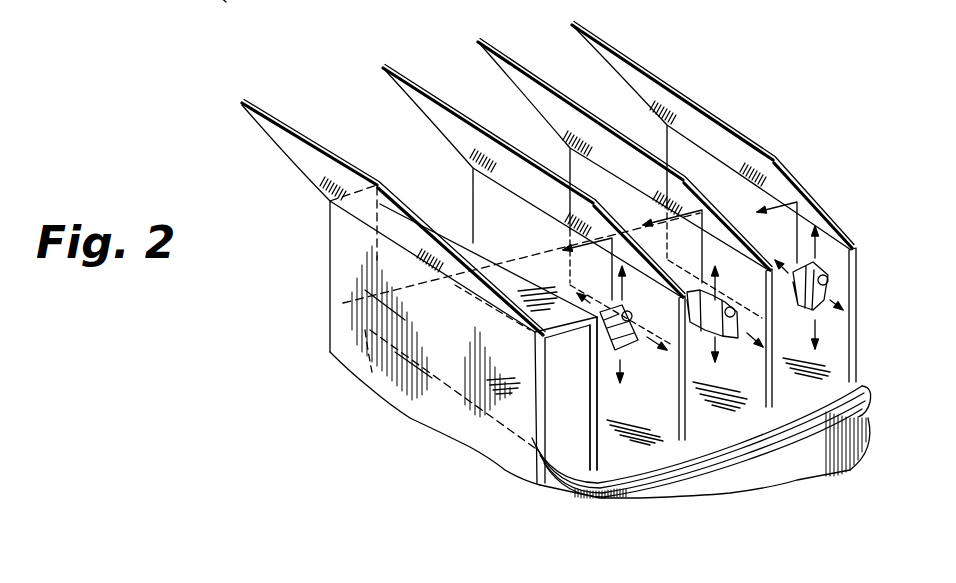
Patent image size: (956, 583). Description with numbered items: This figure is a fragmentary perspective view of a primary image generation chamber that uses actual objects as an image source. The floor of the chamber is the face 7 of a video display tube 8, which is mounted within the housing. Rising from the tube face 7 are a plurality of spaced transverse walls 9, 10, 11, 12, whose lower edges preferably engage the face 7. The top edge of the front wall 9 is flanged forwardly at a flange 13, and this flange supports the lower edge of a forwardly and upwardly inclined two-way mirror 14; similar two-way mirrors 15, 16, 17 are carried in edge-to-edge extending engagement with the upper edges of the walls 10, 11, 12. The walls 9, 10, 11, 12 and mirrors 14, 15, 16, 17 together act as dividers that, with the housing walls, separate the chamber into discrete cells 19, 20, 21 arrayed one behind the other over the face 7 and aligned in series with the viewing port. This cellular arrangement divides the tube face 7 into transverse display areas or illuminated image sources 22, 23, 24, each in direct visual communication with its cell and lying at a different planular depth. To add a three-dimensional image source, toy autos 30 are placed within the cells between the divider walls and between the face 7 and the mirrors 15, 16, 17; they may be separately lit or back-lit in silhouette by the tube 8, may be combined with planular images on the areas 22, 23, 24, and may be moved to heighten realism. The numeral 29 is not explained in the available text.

The face of video display tube 7 is at (757, 421).
The video display tube 8 is at (807, 471).
The front wall 9 is at (600, 419).
The transverse wall 10 is at (685, 393).
The transverse wall 11 is at (771, 368).
The transverse wall 12 is at (856, 284).
The flange 13 is at (565, 327).
The two-way mirror 14 is at (243, 102).
The two-way mirror 15 is at (386, 67).
The two-way mirror 16 is at (497, 52).
The two-way mirror 17 is at (623, 58).
The cell 19 is at (345, 100).
The cell 20 is at (453, 63).
The cell 21 is at (555, 42).
The display area 22 is at (605, 438).
The display area 23 is at (697, 410).
The display area 24 is at (783, 383).
The upper element (cut off) 29 is at (235, 8).
The toy auto 30 is at (622, 349).